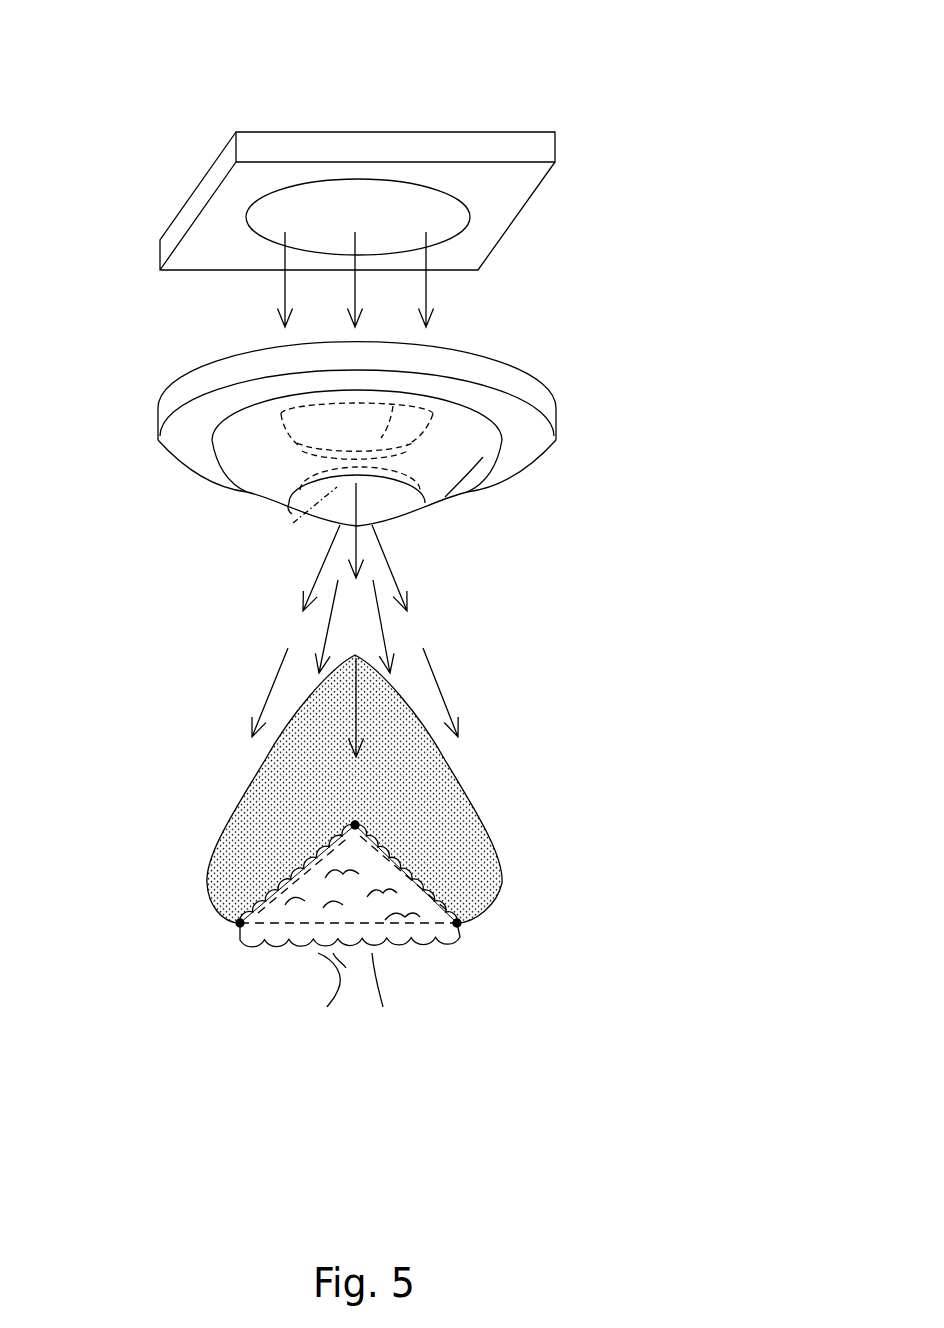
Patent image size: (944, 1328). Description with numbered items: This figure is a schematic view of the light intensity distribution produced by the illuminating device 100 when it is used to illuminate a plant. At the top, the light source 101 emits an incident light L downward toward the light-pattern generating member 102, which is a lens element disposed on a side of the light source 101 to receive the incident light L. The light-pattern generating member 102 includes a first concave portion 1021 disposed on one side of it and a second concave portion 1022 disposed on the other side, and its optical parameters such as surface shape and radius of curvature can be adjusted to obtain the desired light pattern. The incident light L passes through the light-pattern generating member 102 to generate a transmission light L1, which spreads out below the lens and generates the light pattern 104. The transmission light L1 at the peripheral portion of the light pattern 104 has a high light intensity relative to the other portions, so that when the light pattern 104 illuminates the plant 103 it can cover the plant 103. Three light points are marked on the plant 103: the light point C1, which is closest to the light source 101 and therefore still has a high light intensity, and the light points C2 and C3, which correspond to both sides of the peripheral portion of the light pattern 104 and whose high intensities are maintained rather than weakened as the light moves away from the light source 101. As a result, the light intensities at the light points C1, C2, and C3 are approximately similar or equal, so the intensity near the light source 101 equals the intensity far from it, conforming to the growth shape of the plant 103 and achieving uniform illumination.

The illuminating device 100 is at (90, 40).
The light source 101 is at (455, 220).
The incident light L is at (427, 295).
The light-pattern generating member 102 is at (380, 448).
The first concave portion 1021 is at (312, 500).
The second concave portion 1022 is at (326, 402).
The transmission light L1 is at (440, 685).
The light pattern 104 is at (455, 808).
The plant 103 is at (367, 975).
The light point C1 is at (355, 825).
The light point C2 is at (240, 923).
The light point C3 is at (457, 923).